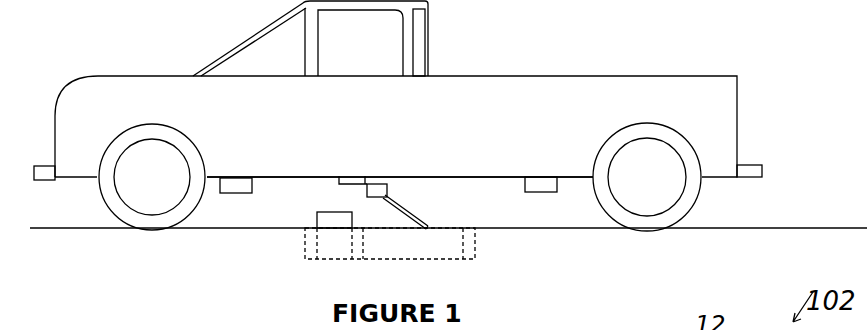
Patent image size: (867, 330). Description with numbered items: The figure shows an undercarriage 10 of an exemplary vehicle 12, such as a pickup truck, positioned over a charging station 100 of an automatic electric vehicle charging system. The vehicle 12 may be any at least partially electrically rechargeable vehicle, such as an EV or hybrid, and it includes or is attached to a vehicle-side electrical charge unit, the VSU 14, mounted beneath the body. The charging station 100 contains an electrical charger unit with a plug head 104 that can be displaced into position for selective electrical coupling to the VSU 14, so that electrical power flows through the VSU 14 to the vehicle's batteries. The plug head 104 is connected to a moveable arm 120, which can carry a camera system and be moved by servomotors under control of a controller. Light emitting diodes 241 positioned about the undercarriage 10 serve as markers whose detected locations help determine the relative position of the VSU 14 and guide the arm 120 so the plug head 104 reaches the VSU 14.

The undercarriage 10 is at (473, 176).
The vehicle 12 is at (558, 105).
The vehicle-side electrical charge unit (VSU) 14 is at (353, 241).
The charging station 100 is at (467, 258).
The plug head 104 is at (387, 190).
The moveable arm 120 is at (404, 212).
The light emitting diodes (LEDs) 241 is at (240, 195).